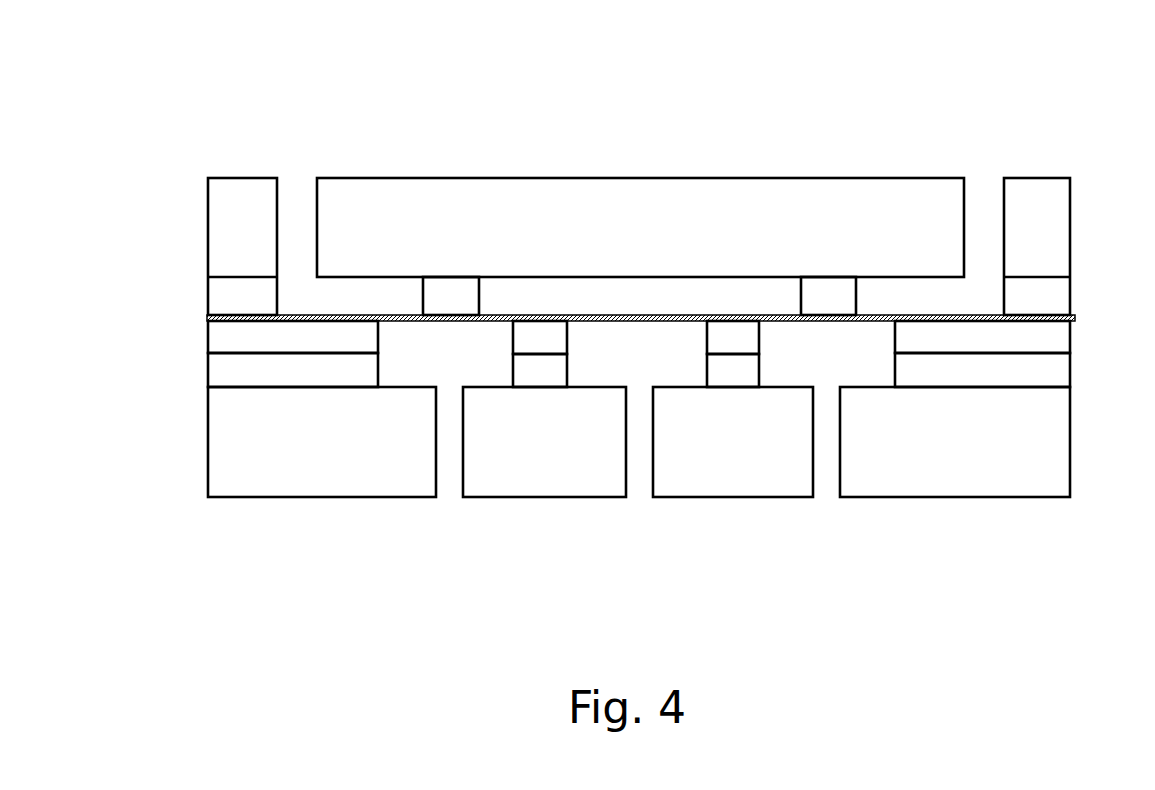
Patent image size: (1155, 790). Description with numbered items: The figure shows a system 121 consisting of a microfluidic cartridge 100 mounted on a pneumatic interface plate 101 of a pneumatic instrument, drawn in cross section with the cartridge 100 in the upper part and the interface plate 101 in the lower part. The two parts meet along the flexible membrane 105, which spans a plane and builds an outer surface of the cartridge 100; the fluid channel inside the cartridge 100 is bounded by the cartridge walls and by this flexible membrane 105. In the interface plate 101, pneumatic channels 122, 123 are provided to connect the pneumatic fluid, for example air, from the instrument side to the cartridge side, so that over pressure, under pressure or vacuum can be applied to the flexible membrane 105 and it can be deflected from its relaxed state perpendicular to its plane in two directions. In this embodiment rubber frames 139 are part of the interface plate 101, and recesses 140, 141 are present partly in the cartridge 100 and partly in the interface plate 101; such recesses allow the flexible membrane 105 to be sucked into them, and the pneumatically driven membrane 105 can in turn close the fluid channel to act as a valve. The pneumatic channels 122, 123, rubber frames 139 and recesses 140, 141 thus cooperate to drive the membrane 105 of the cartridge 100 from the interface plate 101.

The microfluidic cartridge 100 is at (195, 178).
The pneumatic interface plate 101 is at (195, 357).
The flexible membrane 105 is at (1100, 315).
The system 121 is at (217, 110).
The pneumatic channel 122 is at (642, 470).
The pneumatic channel 123 is at (457, 482).
The rubber frame 139 is at (295, 373).
The recess 140 is at (402, 330).
The recess 141 is at (502, 332).